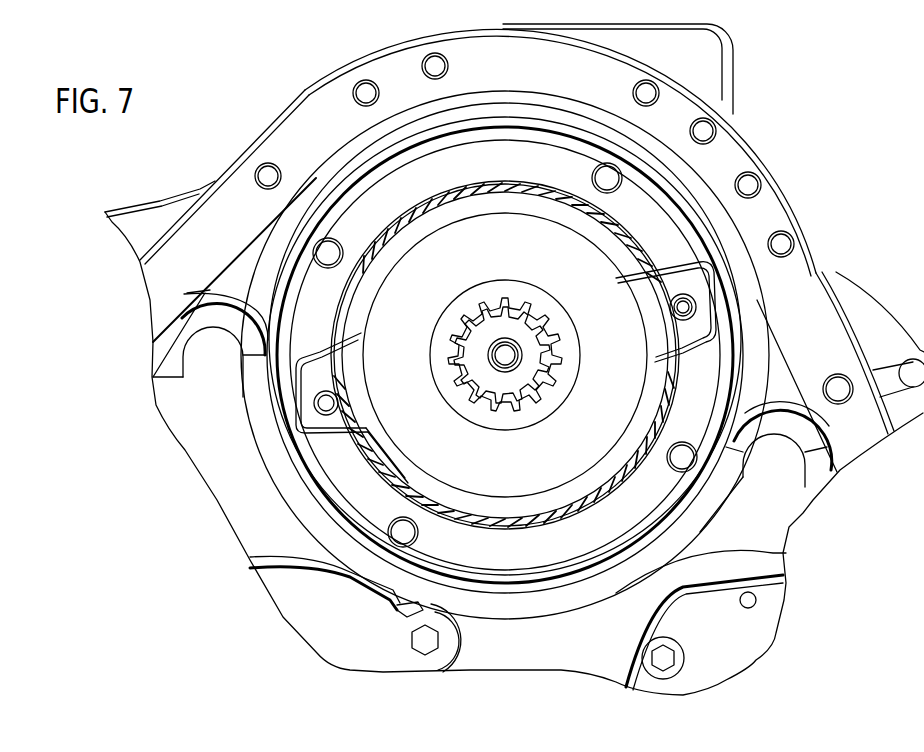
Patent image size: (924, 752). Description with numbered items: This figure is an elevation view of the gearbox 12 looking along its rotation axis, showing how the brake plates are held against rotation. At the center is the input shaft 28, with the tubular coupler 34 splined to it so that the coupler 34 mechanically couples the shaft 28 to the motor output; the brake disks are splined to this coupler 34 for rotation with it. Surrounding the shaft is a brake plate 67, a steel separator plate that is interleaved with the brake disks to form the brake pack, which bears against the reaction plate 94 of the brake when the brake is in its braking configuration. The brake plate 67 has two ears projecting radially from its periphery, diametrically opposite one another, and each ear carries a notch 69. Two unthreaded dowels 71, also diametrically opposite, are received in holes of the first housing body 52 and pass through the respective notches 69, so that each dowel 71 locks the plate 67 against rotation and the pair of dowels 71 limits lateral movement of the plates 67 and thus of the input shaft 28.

The gearbox 12 is at (794, 113).
The first housing body 52 is at (818, 272).
The brake plate 67 is at (633, 397).
The reaction plate 94 is at (598, 488).
The notch 69 is at (335, 398).
The dowel 71 is at (303, 404).
The input shaft 28 is at (556, 378).
The tubular coupler 34 is at (556, 340).